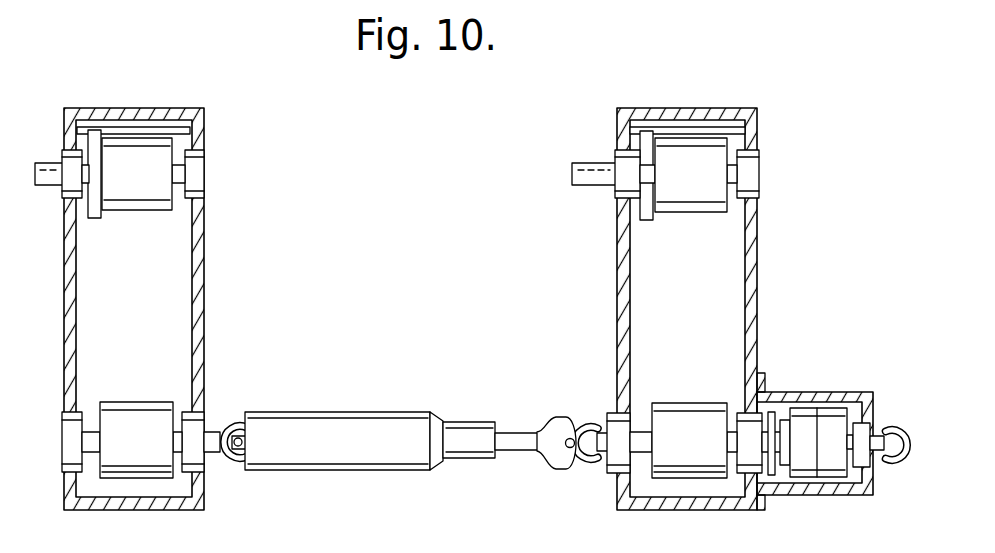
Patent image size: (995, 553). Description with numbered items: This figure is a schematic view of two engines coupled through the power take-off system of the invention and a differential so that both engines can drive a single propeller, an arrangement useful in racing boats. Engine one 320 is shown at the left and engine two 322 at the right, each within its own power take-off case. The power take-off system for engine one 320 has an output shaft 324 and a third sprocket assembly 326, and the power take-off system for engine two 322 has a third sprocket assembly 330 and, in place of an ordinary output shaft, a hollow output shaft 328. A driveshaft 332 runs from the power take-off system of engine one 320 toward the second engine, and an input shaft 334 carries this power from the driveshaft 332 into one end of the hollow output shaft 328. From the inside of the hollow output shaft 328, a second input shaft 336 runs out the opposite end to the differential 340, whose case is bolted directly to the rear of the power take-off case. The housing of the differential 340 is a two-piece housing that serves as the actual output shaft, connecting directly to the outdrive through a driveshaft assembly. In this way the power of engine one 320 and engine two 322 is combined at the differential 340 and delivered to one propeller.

The engine one 320 is at (157, 182).
The engine two 322 is at (710, 182).
The output shaft 324 is at (90, 428).
The third sprocket assembly 326 is at (156, 445).
The hollow output shaft 328 is at (641, 441).
The third sprocket assembly 330 is at (709, 445).
The driveshaft 332 is at (357, 445).
The input shaft 334 is at (610, 448).
The input shaft 336 is at (773, 410).
The differential 340 is at (832, 410).